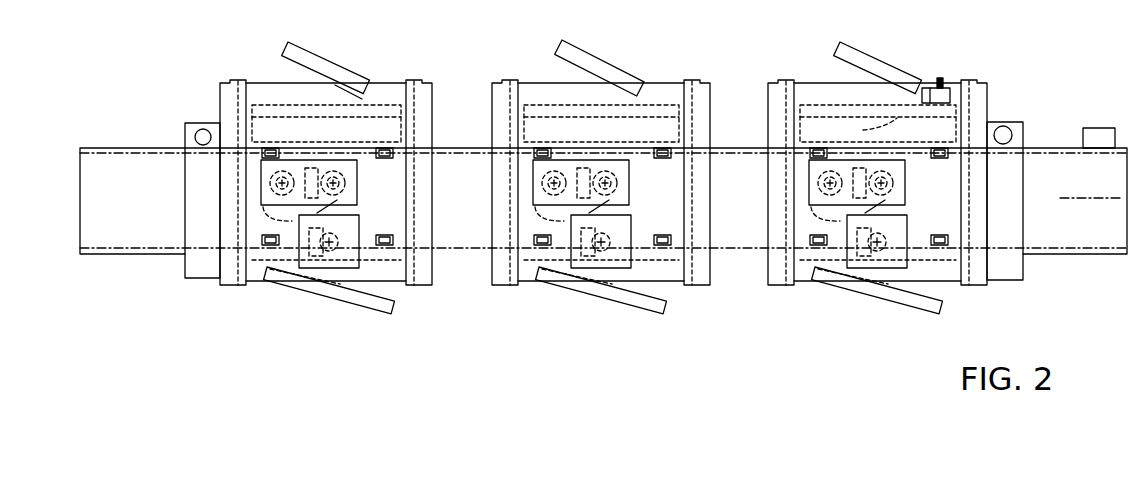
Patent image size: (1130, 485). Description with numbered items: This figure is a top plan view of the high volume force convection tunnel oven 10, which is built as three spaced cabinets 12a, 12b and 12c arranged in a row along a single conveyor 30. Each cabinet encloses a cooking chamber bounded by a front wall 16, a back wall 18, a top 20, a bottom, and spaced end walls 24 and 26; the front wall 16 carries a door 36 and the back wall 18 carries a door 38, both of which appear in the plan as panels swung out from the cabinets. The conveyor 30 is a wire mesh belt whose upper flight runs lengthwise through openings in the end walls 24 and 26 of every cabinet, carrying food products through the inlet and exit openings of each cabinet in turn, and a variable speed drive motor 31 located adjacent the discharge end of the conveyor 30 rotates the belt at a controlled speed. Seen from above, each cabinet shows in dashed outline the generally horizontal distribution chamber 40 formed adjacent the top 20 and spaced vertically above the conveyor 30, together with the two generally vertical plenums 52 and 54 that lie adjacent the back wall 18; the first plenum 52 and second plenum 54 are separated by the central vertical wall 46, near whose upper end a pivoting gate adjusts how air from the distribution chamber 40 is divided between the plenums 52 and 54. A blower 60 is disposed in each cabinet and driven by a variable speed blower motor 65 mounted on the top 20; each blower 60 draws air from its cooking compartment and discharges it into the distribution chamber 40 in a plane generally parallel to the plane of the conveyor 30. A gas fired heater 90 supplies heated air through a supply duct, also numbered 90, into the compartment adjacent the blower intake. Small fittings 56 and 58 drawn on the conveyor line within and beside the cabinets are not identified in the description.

The high volume force convection tunnel oven 10 is at (117, 145).
The cabinet 12a is at (254, 288).
The cabinet 12b is at (532, 286).
The cabinet 12c is at (800, 288).
The front wall 16 is at (388, 272).
The back wall 18 is at (533, 97).
The top 20 is at (805, 270).
The end wall 24 is at (492, 97).
The end wall 26 is at (438, 122).
The conveyor 30 is at (170, 167).
The variable speed drive motor 31 is at (1095, 128).
The door 36 is at (375, 305).
The door 38 is at (287, 46).
The distribution chamber 40 is at (358, 168).
The central vertical wall 46 is at (866, 131).
The first plenum 52 is at (285, 107).
The second plenum 54 is at (373, 130).
The lower connector 56 is at (260, 240).
The upper connector 58 is at (272, 148).
The blower 60 is at (810, 177).
The variable speed blower motor 65 is at (900, 204).
The gas fired heater 90 is at (338, 240).